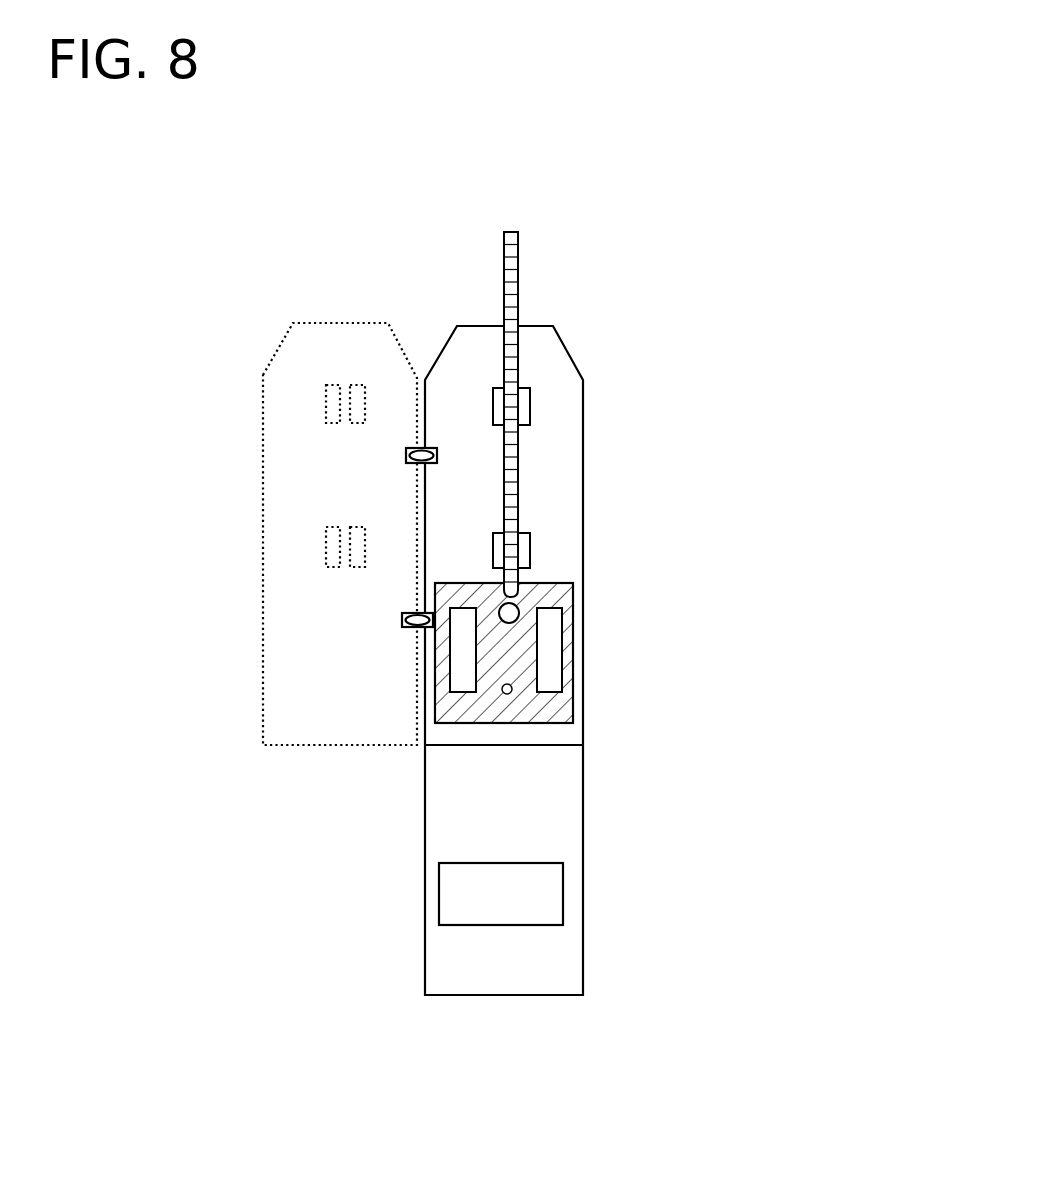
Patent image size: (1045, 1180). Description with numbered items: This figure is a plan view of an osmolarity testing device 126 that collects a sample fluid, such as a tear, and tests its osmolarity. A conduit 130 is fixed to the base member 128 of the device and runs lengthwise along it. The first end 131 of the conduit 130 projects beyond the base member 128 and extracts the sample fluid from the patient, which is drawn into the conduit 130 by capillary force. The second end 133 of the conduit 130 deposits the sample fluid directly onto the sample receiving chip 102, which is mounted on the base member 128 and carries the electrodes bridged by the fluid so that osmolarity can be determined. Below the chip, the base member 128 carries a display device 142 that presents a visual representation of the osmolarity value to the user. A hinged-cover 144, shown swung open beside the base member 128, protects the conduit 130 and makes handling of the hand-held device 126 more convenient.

The osmolarity testing device 126 is at (604, 582).
The base member 128 is at (576, 477).
The conduit 130 is at (518, 290).
The first end 131 is at (512, 230).
The second end 133 is at (510, 585).
The sample receiving chip 102 is at (562, 707).
The display device 142 is at (517, 863).
The hinged-cover 144 is at (354, 679).